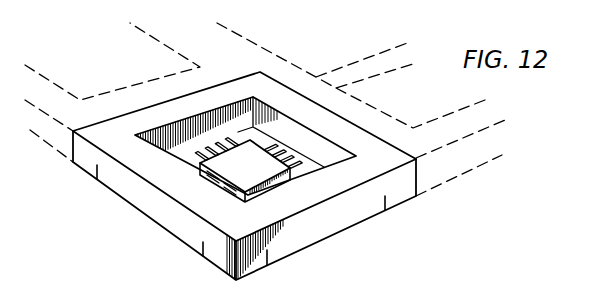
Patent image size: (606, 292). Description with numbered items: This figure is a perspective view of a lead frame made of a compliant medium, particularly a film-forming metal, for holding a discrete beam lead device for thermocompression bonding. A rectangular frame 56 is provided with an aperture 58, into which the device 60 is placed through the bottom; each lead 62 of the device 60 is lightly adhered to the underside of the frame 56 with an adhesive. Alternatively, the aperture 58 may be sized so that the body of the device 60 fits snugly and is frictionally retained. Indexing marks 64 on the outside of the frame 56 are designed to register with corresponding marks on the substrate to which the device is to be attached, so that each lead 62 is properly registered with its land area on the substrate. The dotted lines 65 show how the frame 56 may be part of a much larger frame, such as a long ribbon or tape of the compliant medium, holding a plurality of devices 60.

The rectangular frame 56 is at (165, 214).
The aperture 58 is at (230, 117).
The device 60 is at (258, 168).
The lead 62 is at (318, 157).
The indexing marks 64 is at (385, 206).
The dotted lines 65 is at (133, 85).